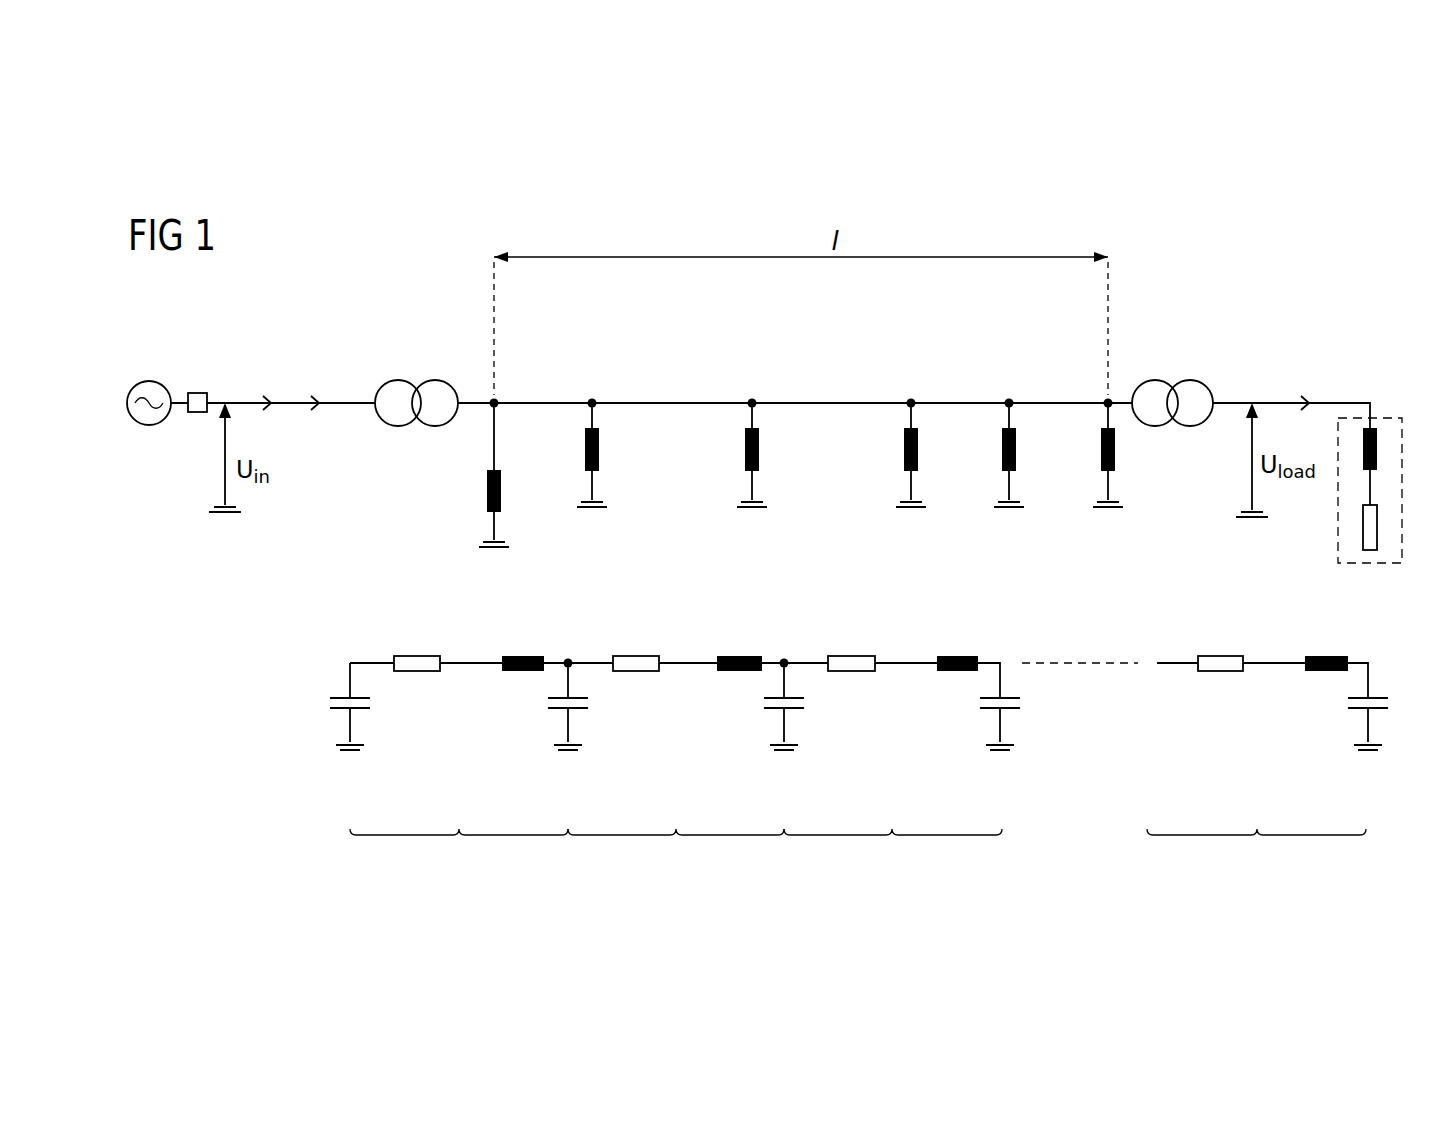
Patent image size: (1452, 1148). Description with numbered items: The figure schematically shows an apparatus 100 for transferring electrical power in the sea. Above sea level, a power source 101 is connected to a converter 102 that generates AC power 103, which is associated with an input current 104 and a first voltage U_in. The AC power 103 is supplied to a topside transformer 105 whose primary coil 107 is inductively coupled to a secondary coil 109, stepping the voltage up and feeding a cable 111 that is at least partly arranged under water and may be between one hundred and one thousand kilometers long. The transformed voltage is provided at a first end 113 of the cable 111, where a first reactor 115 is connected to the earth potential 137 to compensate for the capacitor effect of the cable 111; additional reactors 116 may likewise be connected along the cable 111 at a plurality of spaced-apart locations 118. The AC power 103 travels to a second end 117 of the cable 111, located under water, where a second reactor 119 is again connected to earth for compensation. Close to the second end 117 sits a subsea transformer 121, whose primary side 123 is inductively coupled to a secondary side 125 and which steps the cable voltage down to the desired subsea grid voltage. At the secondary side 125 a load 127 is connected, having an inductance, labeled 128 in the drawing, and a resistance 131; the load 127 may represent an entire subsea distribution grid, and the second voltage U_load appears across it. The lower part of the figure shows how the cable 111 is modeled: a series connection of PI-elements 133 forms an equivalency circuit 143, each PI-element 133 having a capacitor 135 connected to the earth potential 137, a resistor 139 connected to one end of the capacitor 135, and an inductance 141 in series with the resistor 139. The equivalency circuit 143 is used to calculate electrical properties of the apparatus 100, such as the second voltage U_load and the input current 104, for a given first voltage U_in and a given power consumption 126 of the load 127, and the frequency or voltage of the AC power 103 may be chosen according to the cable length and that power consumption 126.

The apparatus 100 is at (1365, 281).
The power source 101 is at (150, 382).
The converter 102 is at (198, 393).
The AC power 103 is at (268, 397).
The input current 104 is at (316, 397).
The topside transformer 105 is at (417, 382).
The primary coil 107 is at (398, 427).
The secondary coil 109 is at (435, 427).
The cable 111 is at (828, 352).
The first end 113 is at (498, 400).
The first reactor 115 is at (502, 504).
The additional reactors 116 is at (585, 450).
The second end 117 is at (1104, 400).
The locations 118 is at (592, 399).
The second reactor 119 is at (1101, 450).
The subsea transformer 121 is at (1171, 382).
The primary side 123 is at (1155, 427).
The secondary side 125 is at (1190, 427).
The power consumption 126 is at (1306, 397).
The load 127 is at (1395, 458).
The load inductance 128 is at (1378, 450).
The resistance 131 is at (1378, 527).
The PI-elements 133 is at (858, 854).
The capacitor 135 is at (331, 702).
The earth potential 137 is at (493, 552).
The resistor 139 is at (418, 672).
The inductance 141 is at (527, 656).
The equivalency circuit 143 is at (805, 605).